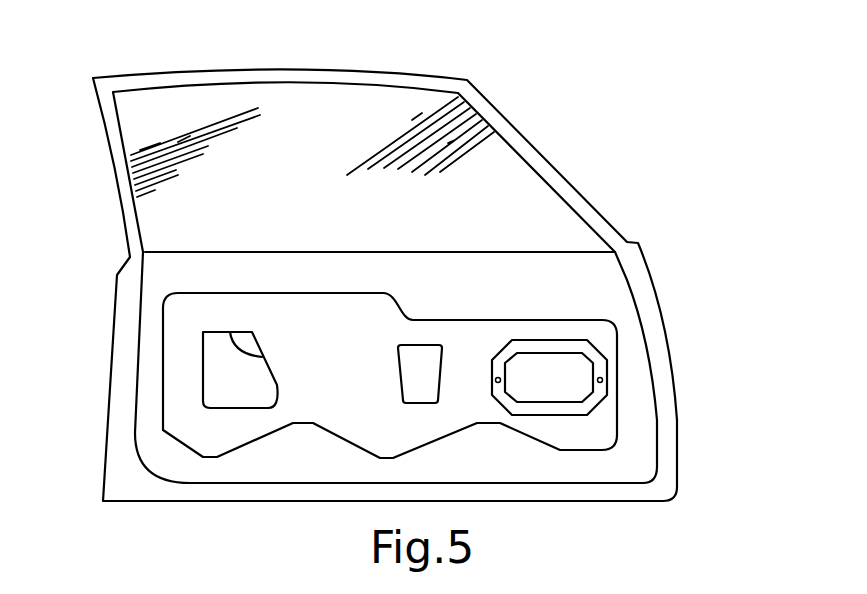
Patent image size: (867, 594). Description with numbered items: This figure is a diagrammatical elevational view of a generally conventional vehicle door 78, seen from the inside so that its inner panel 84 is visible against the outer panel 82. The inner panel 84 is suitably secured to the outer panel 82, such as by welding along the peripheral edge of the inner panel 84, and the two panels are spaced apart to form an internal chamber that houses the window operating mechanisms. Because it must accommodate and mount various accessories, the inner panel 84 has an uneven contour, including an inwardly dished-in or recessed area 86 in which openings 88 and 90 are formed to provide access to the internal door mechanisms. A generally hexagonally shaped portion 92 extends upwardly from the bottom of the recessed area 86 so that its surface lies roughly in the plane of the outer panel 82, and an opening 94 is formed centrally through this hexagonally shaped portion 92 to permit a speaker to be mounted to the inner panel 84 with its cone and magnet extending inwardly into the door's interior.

The vehicle door 78 is at (399, 306).
The outer panel 82 is at (118, 357).
The inner panel 84 is at (150, 452).
The recessed area 86 is at (312, 412).
The opening 88 is at (262, 357).
The opening 90 is at (420, 345).
The hexagonally shaped portion 92 is at (568, 408).
The opening 94 is at (584, 375).